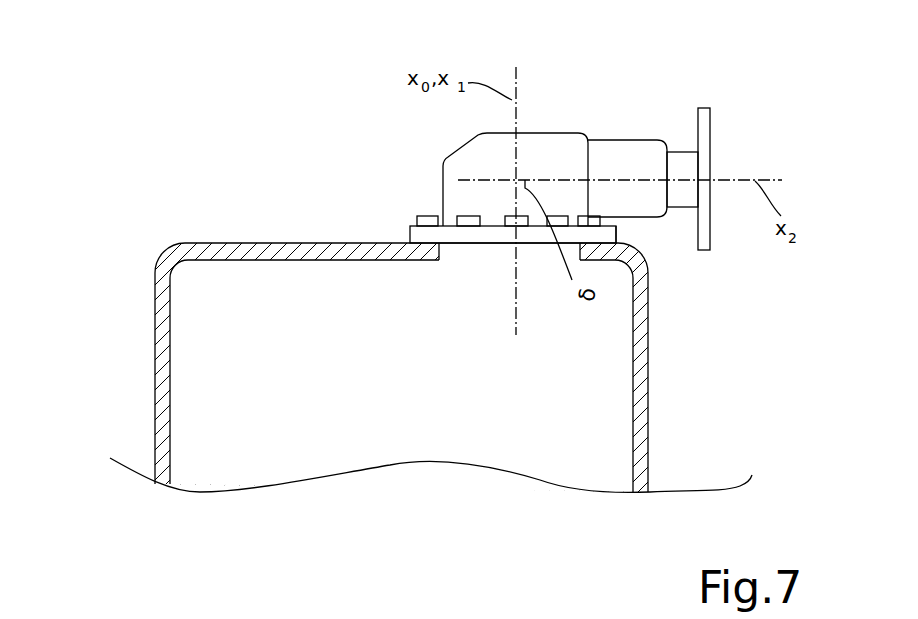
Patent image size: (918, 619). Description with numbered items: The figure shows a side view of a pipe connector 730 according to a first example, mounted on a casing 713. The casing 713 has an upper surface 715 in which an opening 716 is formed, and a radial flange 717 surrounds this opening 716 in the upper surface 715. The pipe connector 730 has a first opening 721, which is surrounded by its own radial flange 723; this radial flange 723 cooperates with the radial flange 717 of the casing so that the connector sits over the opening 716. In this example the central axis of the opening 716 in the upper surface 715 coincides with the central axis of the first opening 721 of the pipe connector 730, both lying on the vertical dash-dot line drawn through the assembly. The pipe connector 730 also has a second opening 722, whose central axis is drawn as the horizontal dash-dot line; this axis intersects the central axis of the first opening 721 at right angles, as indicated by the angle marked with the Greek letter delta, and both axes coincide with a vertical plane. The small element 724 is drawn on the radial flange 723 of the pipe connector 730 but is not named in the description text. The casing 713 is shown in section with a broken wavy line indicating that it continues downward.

The casing 713 is at (153, 347).
The upper surface 715 is at (235, 243).
The opening 716 is at (475, 270).
The radial flange 717 is at (598, 243).
The first opening 721 is at (537, 252).
The second opening 722 is at (720, 162).
The radial flange 723 is at (422, 235).
The fastening element 724 is at (430, 218).
The pipe connector 730 is at (627, 72).